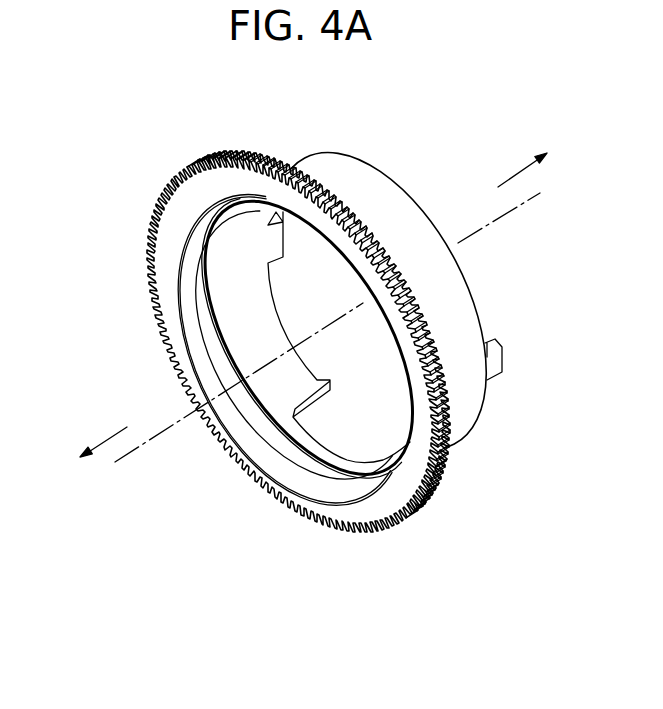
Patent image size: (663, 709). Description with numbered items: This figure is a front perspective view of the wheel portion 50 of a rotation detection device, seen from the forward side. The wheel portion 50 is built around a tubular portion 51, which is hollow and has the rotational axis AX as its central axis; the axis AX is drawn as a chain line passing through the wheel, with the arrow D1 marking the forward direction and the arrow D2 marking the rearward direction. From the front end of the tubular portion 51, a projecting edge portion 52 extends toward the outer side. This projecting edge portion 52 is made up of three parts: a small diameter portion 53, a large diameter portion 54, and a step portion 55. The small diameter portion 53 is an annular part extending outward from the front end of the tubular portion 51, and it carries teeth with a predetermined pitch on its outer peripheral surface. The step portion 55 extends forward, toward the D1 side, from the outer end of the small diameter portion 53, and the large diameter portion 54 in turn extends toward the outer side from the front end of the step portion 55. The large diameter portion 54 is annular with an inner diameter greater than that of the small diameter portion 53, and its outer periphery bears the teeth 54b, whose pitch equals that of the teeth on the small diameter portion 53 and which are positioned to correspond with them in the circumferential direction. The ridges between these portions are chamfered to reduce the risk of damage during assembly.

The wheel portion 50 is at (330, 382).
The tubular portion 51 is at (377, 207).
The projecting edge portion 52 is at (293, 336).
The small diameter portion 53 is at (309, 312).
The large diameter portion 54 is at (164, 241).
The teeth 54b is at (403, 527).
The step portion 55 is at (185, 243).
The rotational axis AX is at (160, 435).
The D1 direction D1 is at (86, 455).
The D2 direction D2 is at (543, 164).